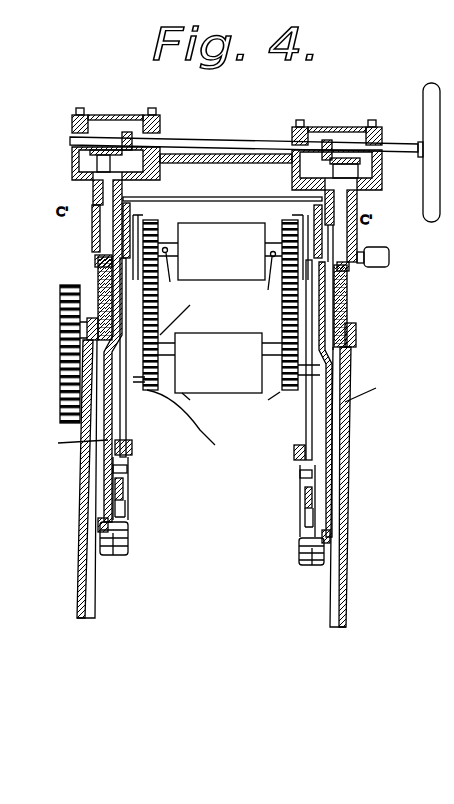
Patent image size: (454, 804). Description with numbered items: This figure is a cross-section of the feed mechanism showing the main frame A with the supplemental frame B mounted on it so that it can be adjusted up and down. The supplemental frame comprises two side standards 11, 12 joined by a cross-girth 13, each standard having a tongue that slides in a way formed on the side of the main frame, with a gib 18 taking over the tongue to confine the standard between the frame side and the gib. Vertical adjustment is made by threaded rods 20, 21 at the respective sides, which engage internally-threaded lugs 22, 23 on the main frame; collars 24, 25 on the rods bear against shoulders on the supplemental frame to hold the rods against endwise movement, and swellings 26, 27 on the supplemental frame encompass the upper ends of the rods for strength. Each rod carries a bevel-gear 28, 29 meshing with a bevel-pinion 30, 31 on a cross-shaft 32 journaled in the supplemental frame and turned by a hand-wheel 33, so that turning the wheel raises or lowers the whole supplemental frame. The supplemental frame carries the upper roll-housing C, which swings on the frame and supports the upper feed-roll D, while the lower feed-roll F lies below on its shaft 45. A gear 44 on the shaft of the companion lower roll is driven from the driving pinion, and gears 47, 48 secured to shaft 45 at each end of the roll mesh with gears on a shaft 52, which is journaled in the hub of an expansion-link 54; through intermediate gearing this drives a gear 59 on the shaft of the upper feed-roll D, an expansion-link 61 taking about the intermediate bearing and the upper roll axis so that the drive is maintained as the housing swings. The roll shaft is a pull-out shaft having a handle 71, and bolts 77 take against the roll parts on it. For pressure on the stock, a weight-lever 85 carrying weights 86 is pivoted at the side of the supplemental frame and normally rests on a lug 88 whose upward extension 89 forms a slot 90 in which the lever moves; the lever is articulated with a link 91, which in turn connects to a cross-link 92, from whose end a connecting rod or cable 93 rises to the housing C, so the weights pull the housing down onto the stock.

The side standard 11 is at (371, 390).
The side standard 12 is at (70, 445).
The cross-girth 13 is at (223, 165).
The gib 18 is at (98, 527).
The threaded rod 20 is at (326, 282).
The threaded rod 21 is at (97, 262).
The internally-threaded lug 22 is at (356, 331).
The internally-threaded lug 23 is at (60, 326).
The collar 24 is at (357, 202).
The collar 25 is at (93, 192).
The swelling 26 is at (349, 262).
The swelling 27 is at (92, 230).
The bevel-gear 28 is at (360, 172).
The bevel-gear 29 is at (102, 163).
The bevel-pinion 30 is at (306, 140).
The bevel-pinion 31 is at (130, 134).
The cross-shaft 32 is at (230, 141).
The hand-wheel 33 is at (424, 98).
The gear 44 is at (62, 356).
The shaft 45 is at (192, 407).
The gear 47 is at (269, 407).
The gear 48 is at (191, 427).
The shaft 52 is at (188, 314).
The expansion-link 54 is at (100, 288).
The gear 59 is at (160, 228).
The expansion-link 61 is at (302, 212).
The handle 71 is at (390, 259).
The bolt 77 is at (219, 281).
The weight-lever 85 is at (124, 489).
The weight 86 is at (212, 560).
The lug 88 is at (122, 520).
The upward extension 89 is at (127, 504).
The slot 90 is at (127, 470).
The link 91 is at (126, 458).
The cross-link 92 is at (132, 447).
The connecting rod or cable 93 is at (126, 410).
The main frame A is at (82, 470).
The supplemental frame B is at (160, 175).
The upper roll-housing C is at (232, 200).
The upper feed-roll D is at (220, 251).
The lower feed-roll F is at (226, 363).